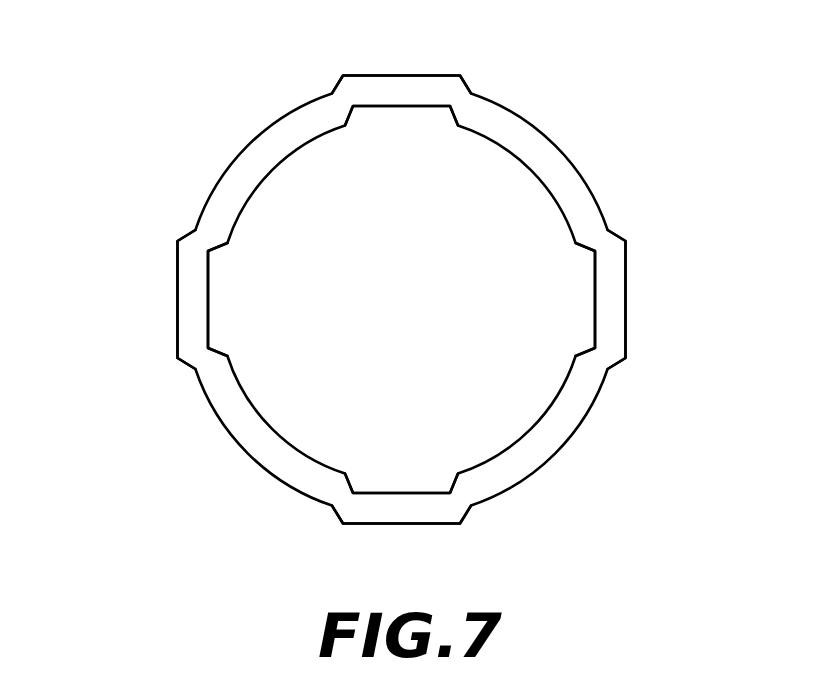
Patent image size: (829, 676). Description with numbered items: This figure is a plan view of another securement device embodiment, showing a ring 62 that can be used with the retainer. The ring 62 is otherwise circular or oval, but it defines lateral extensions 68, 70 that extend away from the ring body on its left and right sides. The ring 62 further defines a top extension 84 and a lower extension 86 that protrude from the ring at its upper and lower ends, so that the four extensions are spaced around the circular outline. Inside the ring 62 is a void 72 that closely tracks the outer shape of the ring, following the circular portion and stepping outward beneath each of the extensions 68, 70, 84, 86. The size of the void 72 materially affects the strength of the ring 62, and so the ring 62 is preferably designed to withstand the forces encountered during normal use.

The ring 62 is at (538, 148).
The lateral extension 68 is at (613, 311).
The lateral extension 70 is at (188, 299).
The void 72 is at (412, 300).
The top extension 84 is at (405, 95).
The lower extension 86 is at (403, 511).